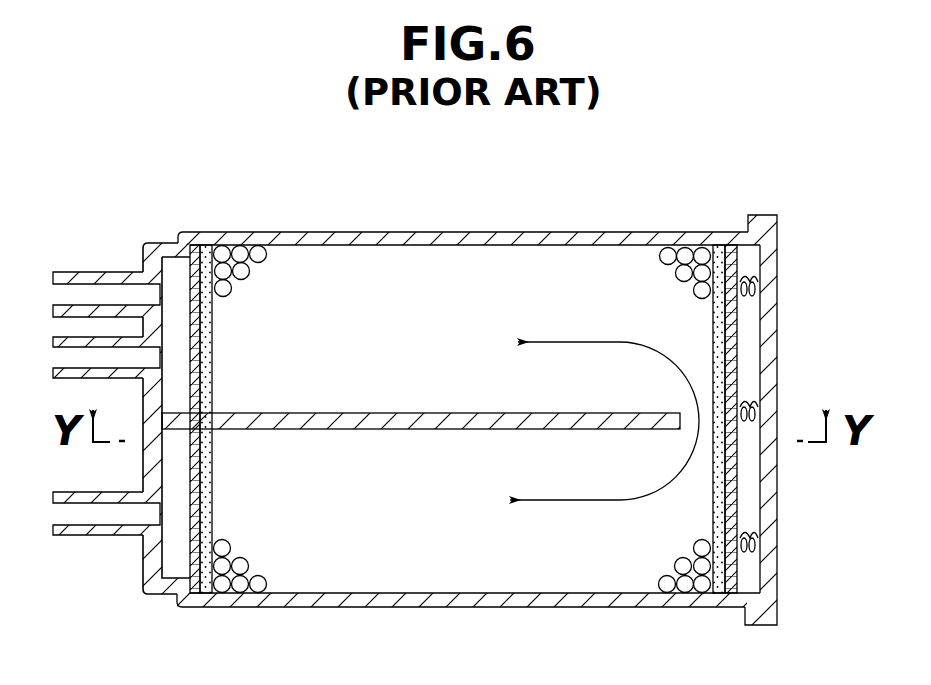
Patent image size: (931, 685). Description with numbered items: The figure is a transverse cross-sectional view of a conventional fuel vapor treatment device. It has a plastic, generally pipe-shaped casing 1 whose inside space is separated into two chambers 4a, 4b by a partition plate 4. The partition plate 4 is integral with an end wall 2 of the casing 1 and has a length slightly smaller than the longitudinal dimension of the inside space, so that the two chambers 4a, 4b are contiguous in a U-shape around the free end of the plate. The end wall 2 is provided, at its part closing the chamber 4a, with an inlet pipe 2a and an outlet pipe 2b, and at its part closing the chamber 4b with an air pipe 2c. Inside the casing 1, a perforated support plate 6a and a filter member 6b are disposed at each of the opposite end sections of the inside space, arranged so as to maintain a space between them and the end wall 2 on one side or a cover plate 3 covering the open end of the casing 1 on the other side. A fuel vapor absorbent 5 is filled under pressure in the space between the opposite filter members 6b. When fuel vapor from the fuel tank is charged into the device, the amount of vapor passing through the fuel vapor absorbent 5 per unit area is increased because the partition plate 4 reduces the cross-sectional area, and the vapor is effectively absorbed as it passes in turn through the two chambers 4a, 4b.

The casing 1 is at (535, 232).
The end wall 2 is at (150, 468).
The inlet pipe 2a is at (88, 272).
The outlet pipe 2b is at (83, 378).
The air pipe 2c is at (83, 535).
The cover plate 3 is at (777, 318).
The partition plate 4 is at (392, 413).
The chamber 4a is at (400, 272).
The chamber 4b is at (467, 535).
The fuel vapor absorbent 5 is at (657, 272).
The perforated support plate 6a is at (192, 313).
The filter member 6b is at (206, 333).